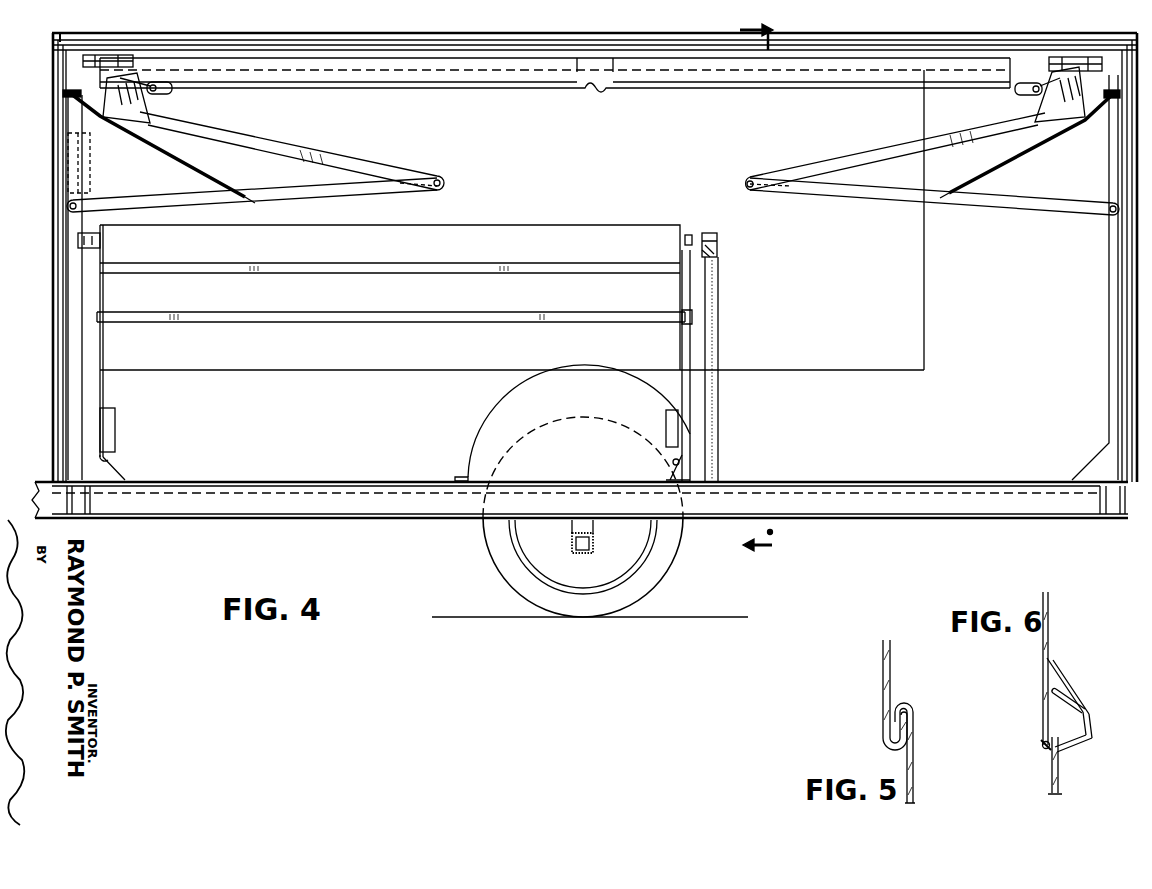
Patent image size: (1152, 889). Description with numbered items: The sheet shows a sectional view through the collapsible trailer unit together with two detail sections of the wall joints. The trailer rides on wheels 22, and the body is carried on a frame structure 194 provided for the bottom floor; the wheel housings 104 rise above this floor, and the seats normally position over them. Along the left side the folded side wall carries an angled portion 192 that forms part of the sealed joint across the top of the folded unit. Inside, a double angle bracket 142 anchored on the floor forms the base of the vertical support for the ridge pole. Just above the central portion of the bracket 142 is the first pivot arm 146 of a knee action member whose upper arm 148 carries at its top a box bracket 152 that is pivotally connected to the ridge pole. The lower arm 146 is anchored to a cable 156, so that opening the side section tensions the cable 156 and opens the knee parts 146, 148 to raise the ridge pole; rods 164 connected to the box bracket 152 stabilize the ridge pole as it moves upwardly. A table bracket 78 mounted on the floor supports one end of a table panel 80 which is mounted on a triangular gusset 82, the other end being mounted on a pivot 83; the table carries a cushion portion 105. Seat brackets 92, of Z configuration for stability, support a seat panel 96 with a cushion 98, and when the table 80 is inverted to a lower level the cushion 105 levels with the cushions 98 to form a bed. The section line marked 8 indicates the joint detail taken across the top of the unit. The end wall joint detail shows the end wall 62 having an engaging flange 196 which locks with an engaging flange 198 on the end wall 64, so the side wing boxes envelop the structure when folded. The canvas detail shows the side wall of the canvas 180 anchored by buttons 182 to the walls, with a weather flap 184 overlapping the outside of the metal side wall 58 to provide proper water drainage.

In FIG. 4, the angled portion 192 is at (57, 34).
In FIG. 4, the section line 8- 8 is at (742, 292).
In FIG. 4, the box bracket 152 is at (157, 101).
In FIG. 4, the upper arm 148 is at (288, 147).
In FIG. 4, the cable 156 is at (197, 167).
In FIG. 4, the first pivot arm 146 is at (368, 188).
In FIG. 4, the double angle bracket 142 is at (72, 218).
In FIG. 4, the pivot 83 is at (78, 250).
In FIG. 4, the cushion 98 is at (540, 236).
In FIG. 4, the supporting panel 96 is at (462, 270).
In FIG. 4, the cushion portion 105 is at (434, 301).
In FIG. 4, the table panel 80 is at (340, 323).
In FIG. 4, the triangular gusset 82 is at (688, 288).
In FIG. 4, the seat bracket 92 is at (682, 352).
In FIG. 4, the table bracket 78 is at (719, 398).
In FIG. 4, the wheel housing 104 is at (576, 412).
In FIG. 4, the wheel 22 is at (487, 568).
In FIG. 4, the frame structure 194 is at (285, 508).
In FIG. 4, the rod 164 is at (466, 88).
In FIG. 5, the end panel 62 is at (882, 660).
In FIG. 5, the engaging flange 198 is at (897, 700).
In FIG. 5, the engaging flange 196 is at (915, 715).
In FIG. 5, the end panel 64 is at (914, 753).
In FIG. 6, the canvas side wall 180 is at (1050, 612).
In FIG. 6, the weather flap 184 is at (1065, 690).
In FIG. 6, the button 182 is at (1045, 750).
In FIG. 6, the vertical panel 58 is at (1060, 790).